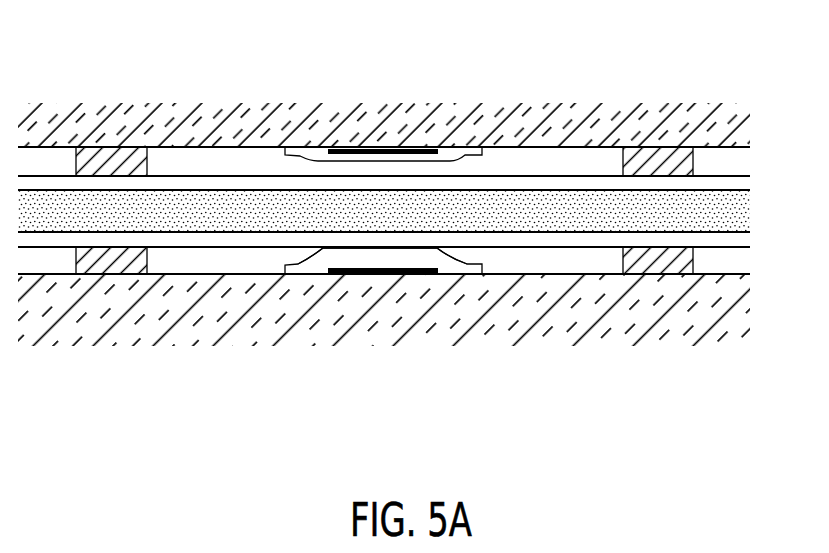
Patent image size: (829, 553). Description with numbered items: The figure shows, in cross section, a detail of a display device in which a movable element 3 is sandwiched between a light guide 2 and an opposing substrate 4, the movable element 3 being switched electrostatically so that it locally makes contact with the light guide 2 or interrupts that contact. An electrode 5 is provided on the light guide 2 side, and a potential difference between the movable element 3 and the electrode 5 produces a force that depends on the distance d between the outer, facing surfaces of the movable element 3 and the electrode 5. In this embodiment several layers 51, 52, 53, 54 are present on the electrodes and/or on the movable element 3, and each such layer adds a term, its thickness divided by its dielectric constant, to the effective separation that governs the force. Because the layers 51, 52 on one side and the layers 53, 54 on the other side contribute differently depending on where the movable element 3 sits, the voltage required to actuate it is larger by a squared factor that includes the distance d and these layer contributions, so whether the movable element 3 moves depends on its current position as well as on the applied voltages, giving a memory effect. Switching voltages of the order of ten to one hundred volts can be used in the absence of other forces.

The light guide 2 is at (558, 323).
The movable element 3 is at (735, 213).
The substrate 4 is at (571, 118).
The electrode 5 is at (373, 276).
The layer 51 is at (720, 182).
The layer 52 is at (719, 242).
The layer 53 is at (446, 262).
The layer 54 is at (457, 150).
The distance d is at (312, 162).